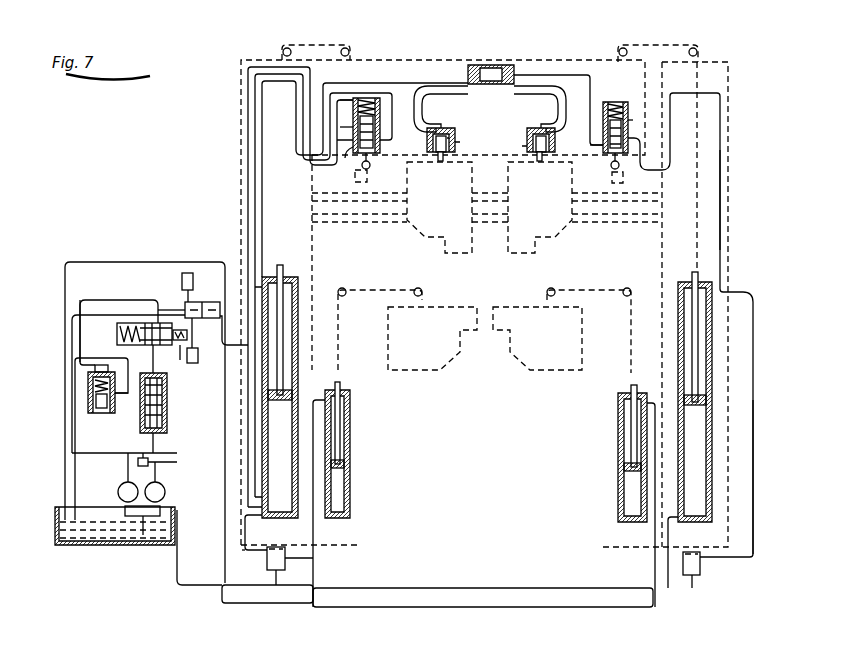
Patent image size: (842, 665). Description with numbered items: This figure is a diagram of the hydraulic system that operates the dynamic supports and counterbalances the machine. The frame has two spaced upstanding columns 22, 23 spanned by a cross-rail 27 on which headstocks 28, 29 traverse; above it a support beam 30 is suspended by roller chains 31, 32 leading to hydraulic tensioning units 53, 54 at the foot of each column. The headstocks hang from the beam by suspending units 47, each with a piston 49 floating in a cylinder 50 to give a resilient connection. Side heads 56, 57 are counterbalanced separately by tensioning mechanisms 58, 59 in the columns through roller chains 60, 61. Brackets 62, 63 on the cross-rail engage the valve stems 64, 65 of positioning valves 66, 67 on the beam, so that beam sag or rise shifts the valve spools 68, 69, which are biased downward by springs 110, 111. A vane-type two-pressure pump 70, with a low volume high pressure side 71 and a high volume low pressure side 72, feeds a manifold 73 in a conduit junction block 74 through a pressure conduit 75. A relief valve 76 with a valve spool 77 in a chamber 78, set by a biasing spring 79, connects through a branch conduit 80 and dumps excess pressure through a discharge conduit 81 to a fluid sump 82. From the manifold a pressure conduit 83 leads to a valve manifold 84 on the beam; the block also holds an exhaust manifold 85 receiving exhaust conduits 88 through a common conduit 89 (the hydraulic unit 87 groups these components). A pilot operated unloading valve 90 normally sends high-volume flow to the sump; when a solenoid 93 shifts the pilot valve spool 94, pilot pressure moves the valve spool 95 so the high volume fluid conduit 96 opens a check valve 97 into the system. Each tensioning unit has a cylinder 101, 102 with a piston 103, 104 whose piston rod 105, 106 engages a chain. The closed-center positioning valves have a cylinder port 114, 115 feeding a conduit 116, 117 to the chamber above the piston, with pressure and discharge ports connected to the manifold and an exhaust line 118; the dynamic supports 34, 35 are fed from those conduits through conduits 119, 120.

The column 22 is at (240, 202).
The column 23 is at (727, 212).
The cross-rail 27 is at (620, 222).
The headstock 28 is at (455, 254).
The headstock 29 is at (538, 244).
The beam 30 is at (427, 148).
The roller chain 31 is at (278, 148).
The roller chain 32 is at (698, 140).
The dynamic support 34 is at (291, 557).
The dynamic support 35 is at (682, 562).
The suspending unit 47 is at (458, 142).
The piston 49 is at (450, 138).
The cylinder 50 is at (420, 125).
The tensioning unit 53 is at (300, 290).
The tensioning unit 54 is at (714, 298).
The side head 56 is at (428, 372).
The side head 57 is at (552, 372).
The tensioning mechanism 58 is at (355, 500).
The tensioning mechanism 59 is at (612, 512).
The roller chain 60 is at (340, 345).
The roller chain 61 is at (628, 345).
The bracket 62 is at (368, 178).
The bracket 63 is at (612, 180).
The valve stem 64 is at (371, 165).
The valve stem 65 is at (611, 165).
The positioning valve 66 is at (343, 102).
The positioning valve 67 is at (620, 102).
The valve spool 68 is at (343, 125).
The valve spool 69 is at (638, 110).
The pump 70 is at (172, 491).
The low volume high pressure side 71 is at (120, 487).
The high volume low pressure side 72 is at (162, 487).
The manifold 73 is at (204, 302).
The conduit junction block 74 is at (198, 338).
The pressure conduit 75 is at (137, 300).
The relief valve 76 is at (112, 422).
The valve spool 77 is at (114, 394).
The chamber 78 is at (92, 412).
The biasing spring 79 is at (113, 355).
The branch conduit 80 is at (118, 446).
The discharge conduit 81 is at (130, 368).
The fluid sump 82 is at (108, 512).
The pressure conduit 83 is at (245, 344).
The valve manifold 84 is at (500, 65).
The exhaust manifold 85 is at (168, 310).
The hydraulic unit 87 is at (100, 262).
The exhaust conduit 88 is at (265, 606).
The common conduit 89 is at (452, 608).
The unloading valve 90 is at (168, 388).
The solenoid 93 is at (180, 350).
The pilot valve spool 94 is at (152, 323).
The valve spool 95 is at (166, 402).
The high volume fluid conduit 96 is at (168, 430).
The check valve 97 is at (150, 462).
The cylinder 101 is at (292, 522).
The cylinder 102 is at (614, 522).
The piston 103 is at (280, 402).
The piston 104 is at (695, 408).
The piston rod 105 is at (277, 270).
The piston rod 106 is at (692, 276).
The spring 110 is at (364, 98).
The spring 111 is at (612, 102).
The cylinder port 114 is at (347, 163).
The cylinder port 115 is at (636, 135).
The conduit 116 is at (253, 190).
The conduit 117 is at (720, 212).
The exhaust line 118 is at (260, 174).
The conduit 119 is at (242, 550).
The conduit 120 is at (753, 556).